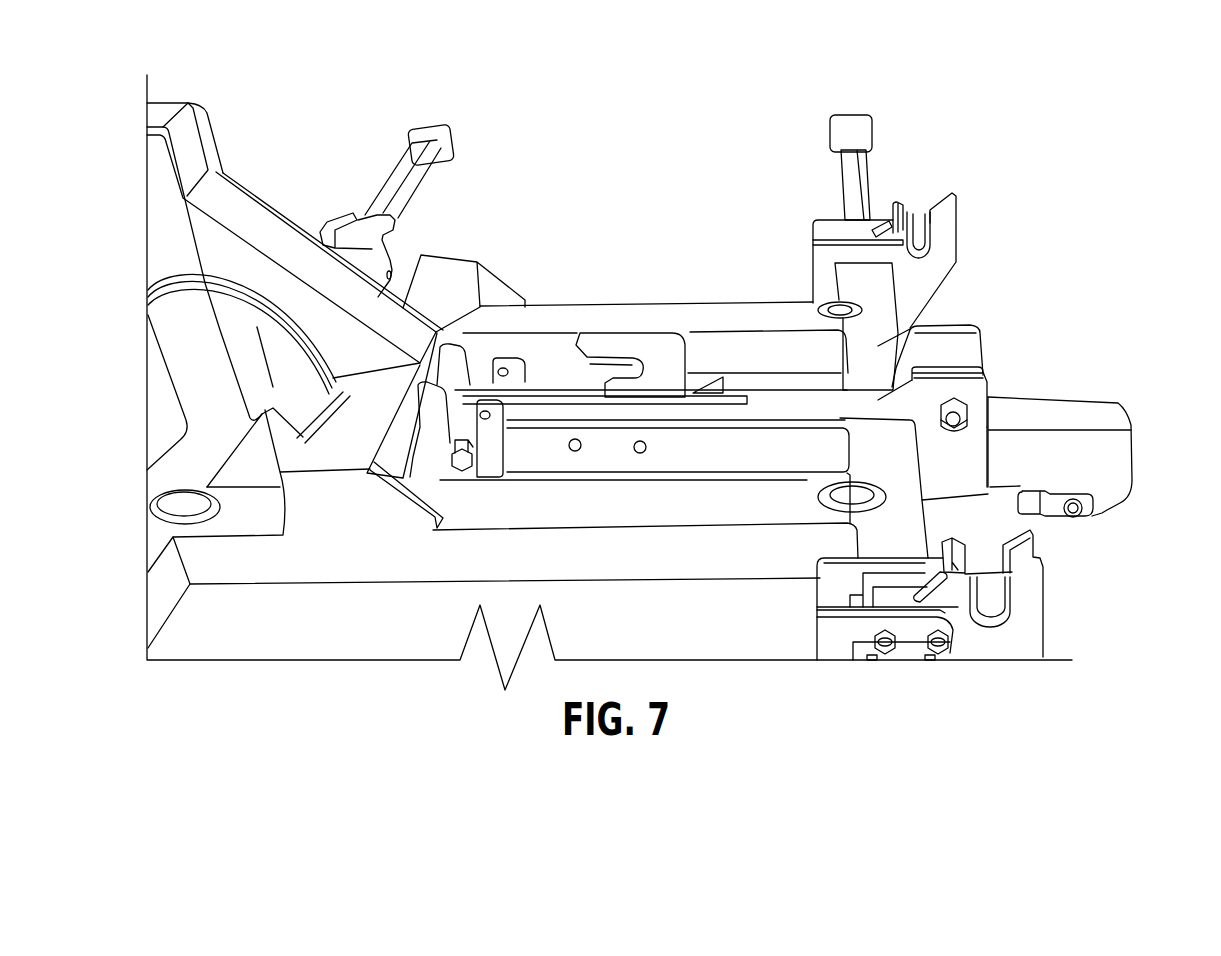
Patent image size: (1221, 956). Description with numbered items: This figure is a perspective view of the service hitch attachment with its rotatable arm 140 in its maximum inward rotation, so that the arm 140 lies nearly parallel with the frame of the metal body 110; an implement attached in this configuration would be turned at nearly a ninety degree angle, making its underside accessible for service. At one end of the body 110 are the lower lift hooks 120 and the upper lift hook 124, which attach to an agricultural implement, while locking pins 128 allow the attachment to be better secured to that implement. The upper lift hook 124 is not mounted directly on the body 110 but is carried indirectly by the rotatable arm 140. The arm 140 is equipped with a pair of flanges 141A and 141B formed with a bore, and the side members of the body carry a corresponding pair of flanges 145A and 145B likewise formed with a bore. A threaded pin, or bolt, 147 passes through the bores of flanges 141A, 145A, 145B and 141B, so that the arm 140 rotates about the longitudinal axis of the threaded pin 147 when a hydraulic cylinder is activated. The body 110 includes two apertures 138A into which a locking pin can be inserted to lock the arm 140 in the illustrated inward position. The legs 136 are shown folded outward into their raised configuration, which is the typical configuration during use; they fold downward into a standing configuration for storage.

The metal body 110 is at (343, 563).
The lower lift hooks 120 is at (937, 207).
The upper lift hook 124 is at (637, 340).
The locking pins 128 is at (990, 578).
The legs 136 is at (430, 127).
The apertures 138A is at (505, 366).
The rotatable arm 140 is at (1103, 420).
The flange 141A is at (968, 370).
The flange 141B is at (957, 337).
The flange 145A is at (970, 468).
The flange 145B is at (877, 360).
The threaded pin 147 is at (957, 420).